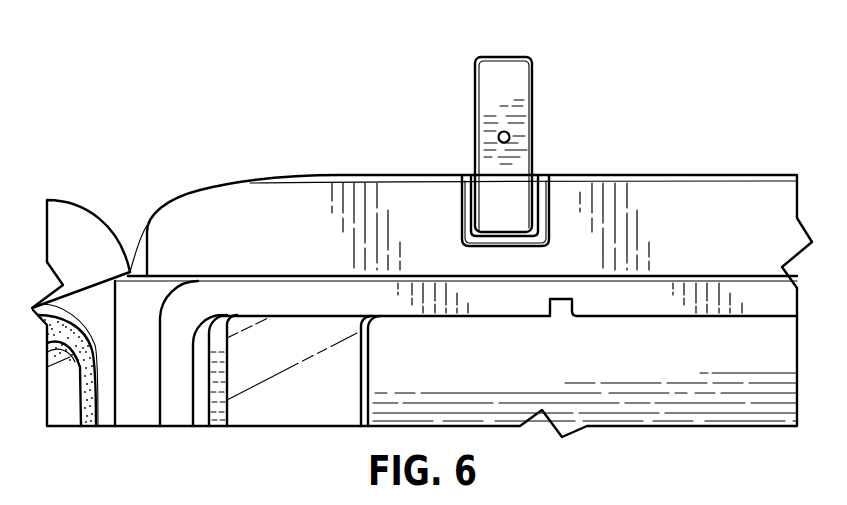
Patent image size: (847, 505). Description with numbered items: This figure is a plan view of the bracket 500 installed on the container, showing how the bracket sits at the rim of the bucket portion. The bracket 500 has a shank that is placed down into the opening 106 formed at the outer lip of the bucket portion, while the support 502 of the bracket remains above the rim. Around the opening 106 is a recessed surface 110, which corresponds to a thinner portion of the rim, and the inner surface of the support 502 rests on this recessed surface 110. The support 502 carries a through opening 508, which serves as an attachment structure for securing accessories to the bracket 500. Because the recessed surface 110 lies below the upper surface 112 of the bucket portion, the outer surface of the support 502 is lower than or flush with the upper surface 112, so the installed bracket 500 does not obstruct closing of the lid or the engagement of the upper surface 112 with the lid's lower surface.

The upper surface 112 is at (237, 207).
The bracket 500 is at (510, 127).
The support 502 is at (497, 87).
The through opening 508 is at (510, 134).
The opening 106 is at (473, 215).
The recessed surface 110 is at (538, 232).